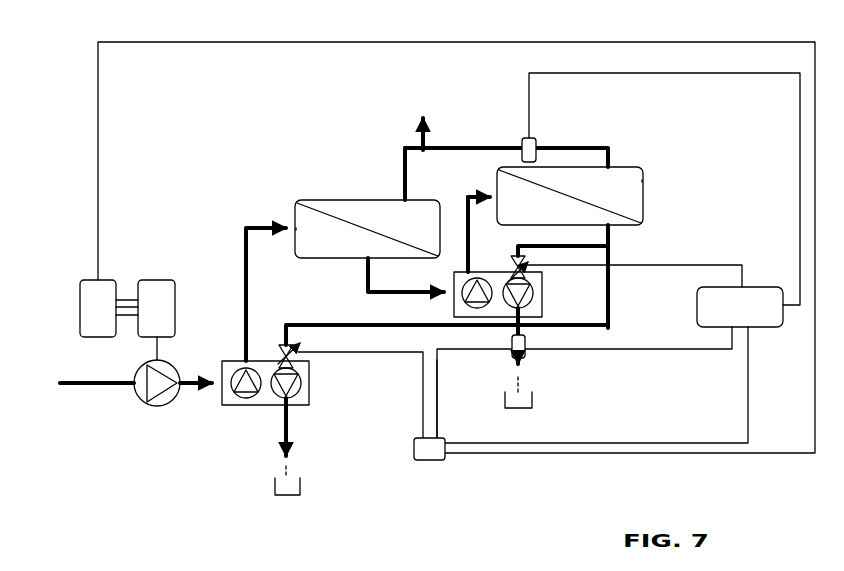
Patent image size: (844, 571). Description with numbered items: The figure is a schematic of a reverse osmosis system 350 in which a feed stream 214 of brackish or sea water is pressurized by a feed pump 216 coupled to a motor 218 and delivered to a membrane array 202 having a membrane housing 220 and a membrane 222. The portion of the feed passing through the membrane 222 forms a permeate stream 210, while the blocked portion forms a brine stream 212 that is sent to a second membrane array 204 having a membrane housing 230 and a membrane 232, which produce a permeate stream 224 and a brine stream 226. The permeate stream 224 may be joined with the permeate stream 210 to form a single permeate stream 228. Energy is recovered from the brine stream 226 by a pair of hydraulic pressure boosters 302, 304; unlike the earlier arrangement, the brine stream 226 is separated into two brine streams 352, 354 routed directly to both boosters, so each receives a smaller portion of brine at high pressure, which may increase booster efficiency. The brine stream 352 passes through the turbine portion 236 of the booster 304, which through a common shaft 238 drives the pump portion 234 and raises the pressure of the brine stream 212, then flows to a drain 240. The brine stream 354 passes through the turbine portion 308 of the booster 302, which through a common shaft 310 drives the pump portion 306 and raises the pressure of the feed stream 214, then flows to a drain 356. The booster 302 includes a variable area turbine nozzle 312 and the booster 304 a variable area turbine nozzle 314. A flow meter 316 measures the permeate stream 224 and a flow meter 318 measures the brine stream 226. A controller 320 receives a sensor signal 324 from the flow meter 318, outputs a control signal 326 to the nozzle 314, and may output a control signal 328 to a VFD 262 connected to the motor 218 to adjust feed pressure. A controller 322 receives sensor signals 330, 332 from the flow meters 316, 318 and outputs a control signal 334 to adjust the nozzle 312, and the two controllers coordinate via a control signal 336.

The membrane array 202 is at (343, 191).
The membrane array 204 is at (597, 171).
The permeate stream 210 is at (408, 183).
The brine stream 212 is at (367, 280).
The feed stream 214 is at (190, 378).
The feed pump 216 is at (141, 399).
The motor 218 is at (157, 280).
The membrane housing 220 is at (318, 200).
The membrane 222 is at (352, 222).
The permeate stream 224 is at (556, 147).
The brine stream 226 is at (610, 243).
The permeate stream 228 is at (426, 140).
The membrane housing 230 is at (643, 178).
The membrane 232 is at (605, 207).
The pump portion 234 is at (462, 307).
The turbine portion 236 is at (534, 300).
The common shaft 238 is at (500, 290).
The drain 240 is at (532, 400).
The VFD 262 is at (80, 292).
The hydraulic pressure booster 302 is at (301, 328).
The hydraulic pressure booster 304 is at (550, 257).
The pump portion 306 is at (246, 406).
The turbine portion 308 is at (307, 383).
The common shaft 310 is at (278, 360).
The variable area turbine nozzle 312 is at (298, 323).
The variable area turbine nozzle 314 is at (512, 240).
The flow meter 316 is at (522, 142).
The flow meter 318 is at (512, 352).
The controller 320 is at (764, 287).
The controller 322 is at (428, 460).
The sensor signal 324 is at (615, 349).
The control signal 326 is at (677, 265).
The control signal 328 is at (712, 42).
The sensor signal 330 is at (741, 75).
The sensor signal 332 is at (438, 403).
The control signal 334 is at (422, 405).
The control signal 336 is at (698, 443).
The reverse osmosis system 350 is at (290, 116).
The brine stream 352 is at (578, 246).
The brine stream 354 is at (607, 310).
The drain 356 is at (300, 493).